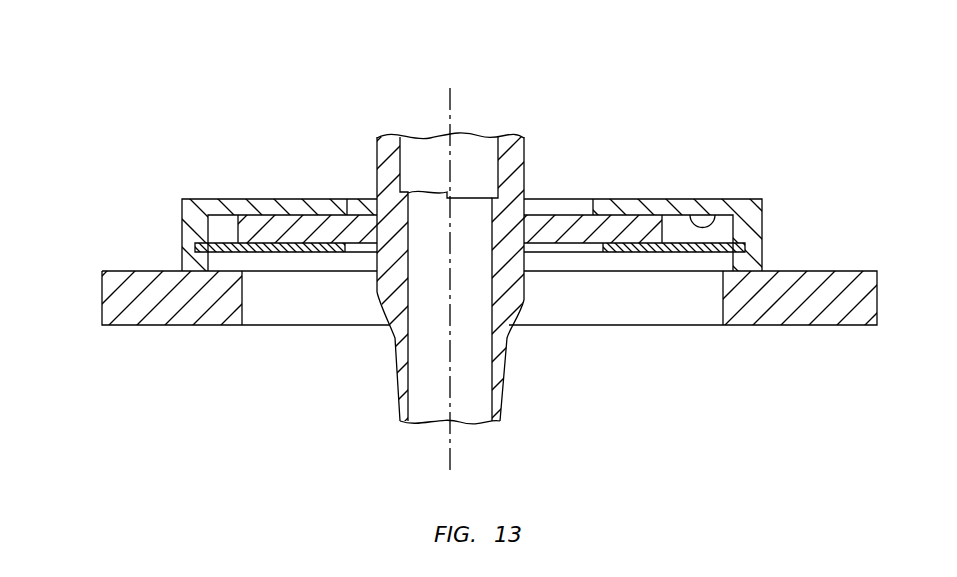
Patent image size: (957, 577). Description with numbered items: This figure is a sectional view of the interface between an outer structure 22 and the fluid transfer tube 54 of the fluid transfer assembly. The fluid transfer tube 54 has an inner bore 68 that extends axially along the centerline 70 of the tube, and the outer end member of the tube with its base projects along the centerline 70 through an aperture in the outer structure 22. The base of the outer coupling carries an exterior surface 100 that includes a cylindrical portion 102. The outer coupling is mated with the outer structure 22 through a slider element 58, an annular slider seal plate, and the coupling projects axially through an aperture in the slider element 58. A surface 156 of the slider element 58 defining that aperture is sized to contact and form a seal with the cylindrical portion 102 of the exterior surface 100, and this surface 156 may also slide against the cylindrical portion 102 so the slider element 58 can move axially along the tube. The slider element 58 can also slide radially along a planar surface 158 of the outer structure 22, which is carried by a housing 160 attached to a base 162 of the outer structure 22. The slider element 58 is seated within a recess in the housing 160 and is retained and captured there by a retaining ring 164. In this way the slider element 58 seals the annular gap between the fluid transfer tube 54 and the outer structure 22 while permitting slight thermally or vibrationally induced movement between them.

The outer structure 22 is at (845, 255).
The fluid transfer tube 54 is at (518, 120).
The slider element 58 is at (632, 227).
The inner bore 68 is at (428, 157).
The centerline 70 is at (450, 460).
The exterior surface 100 is at (377, 289).
The cylindrical portion 102 is at (372, 274).
The surface 156 is at (378, 231).
The surface 158 is at (713, 223).
The housing 160 is at (180, 232).
The base 162 is at (100, 313).
The retaining ring 164 is at (690, 249).